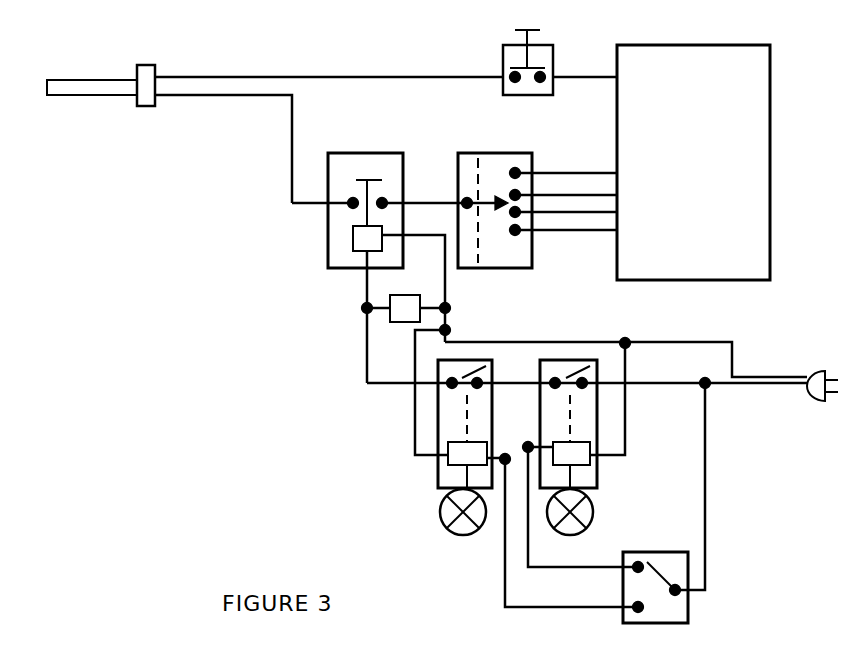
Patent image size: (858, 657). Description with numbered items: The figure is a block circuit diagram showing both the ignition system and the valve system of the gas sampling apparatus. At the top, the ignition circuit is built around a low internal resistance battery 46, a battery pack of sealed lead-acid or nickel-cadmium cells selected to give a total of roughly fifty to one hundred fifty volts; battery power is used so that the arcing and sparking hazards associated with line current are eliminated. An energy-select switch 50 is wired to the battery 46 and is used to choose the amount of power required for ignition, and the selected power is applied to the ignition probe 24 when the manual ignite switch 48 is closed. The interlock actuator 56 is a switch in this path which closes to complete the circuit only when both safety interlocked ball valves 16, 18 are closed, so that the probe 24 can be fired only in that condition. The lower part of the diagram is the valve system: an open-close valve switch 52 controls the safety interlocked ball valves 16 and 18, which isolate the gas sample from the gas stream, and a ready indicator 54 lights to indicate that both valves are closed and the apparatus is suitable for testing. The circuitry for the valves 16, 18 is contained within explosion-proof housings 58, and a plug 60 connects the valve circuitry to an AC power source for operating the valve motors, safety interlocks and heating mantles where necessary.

The ignition probe 24 is at (110, 82).
The manual ignite switch 48 is at (548, 47).
The low internal resistance battery 46 is at (706, 169).
The interlock actuator 56 is at (328, 238).
The energy-select switch 50 is at (520, 250).
The ready indicator 54 is at (402, 315).
The explosion-proof housings 58 is at (536, 363).
The plug 60 is at (815, 375).
The safety interlocked ball valve 18 is at (440, 511).
The safety interlocked ball valve 16 is at (593, 513).
The open-close valve switch 52 is at (670, 612).